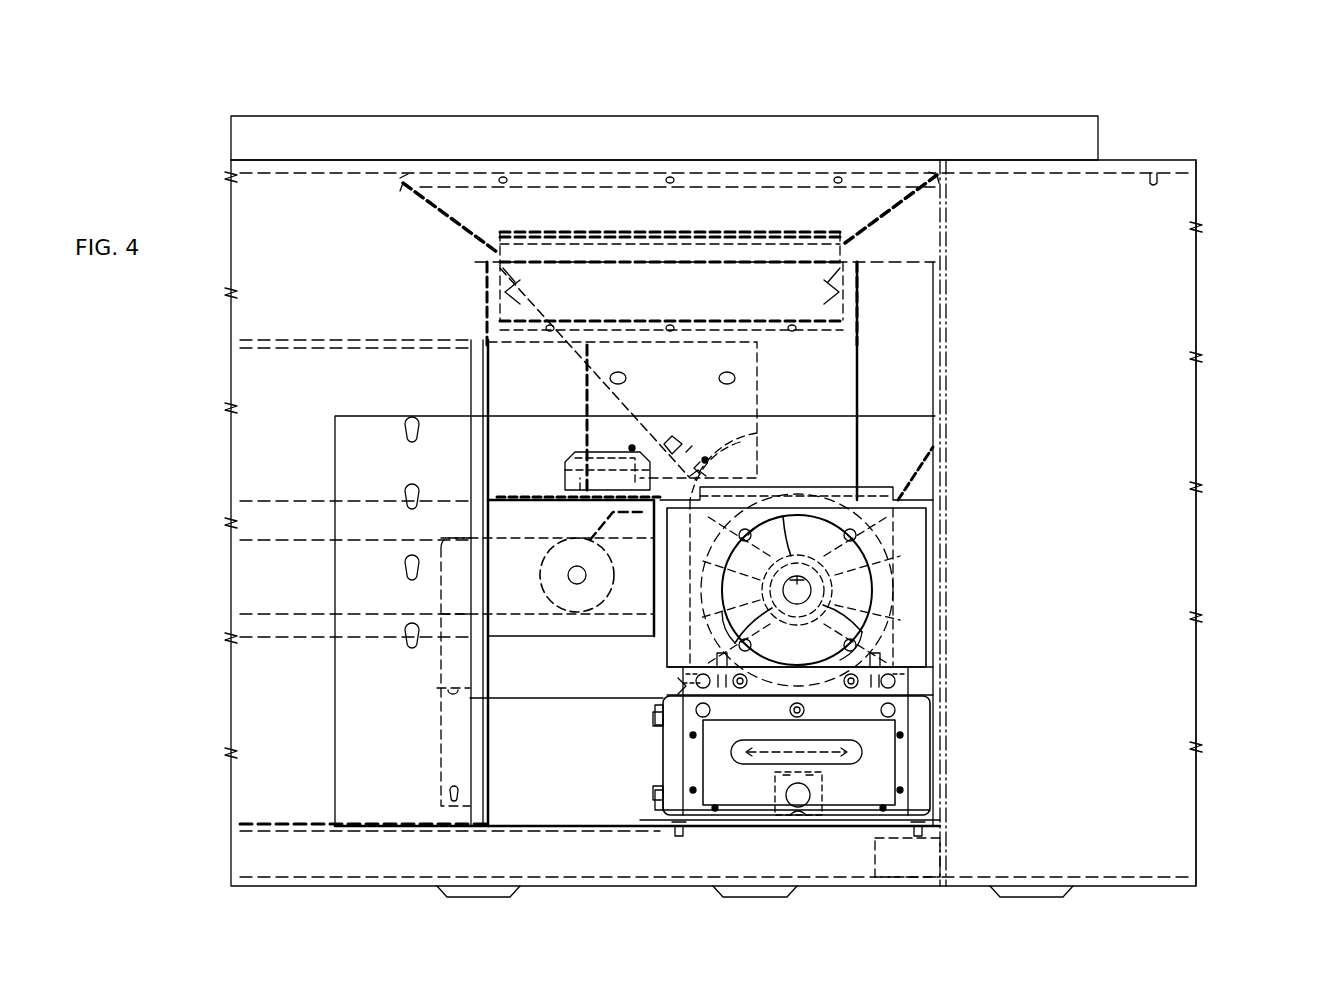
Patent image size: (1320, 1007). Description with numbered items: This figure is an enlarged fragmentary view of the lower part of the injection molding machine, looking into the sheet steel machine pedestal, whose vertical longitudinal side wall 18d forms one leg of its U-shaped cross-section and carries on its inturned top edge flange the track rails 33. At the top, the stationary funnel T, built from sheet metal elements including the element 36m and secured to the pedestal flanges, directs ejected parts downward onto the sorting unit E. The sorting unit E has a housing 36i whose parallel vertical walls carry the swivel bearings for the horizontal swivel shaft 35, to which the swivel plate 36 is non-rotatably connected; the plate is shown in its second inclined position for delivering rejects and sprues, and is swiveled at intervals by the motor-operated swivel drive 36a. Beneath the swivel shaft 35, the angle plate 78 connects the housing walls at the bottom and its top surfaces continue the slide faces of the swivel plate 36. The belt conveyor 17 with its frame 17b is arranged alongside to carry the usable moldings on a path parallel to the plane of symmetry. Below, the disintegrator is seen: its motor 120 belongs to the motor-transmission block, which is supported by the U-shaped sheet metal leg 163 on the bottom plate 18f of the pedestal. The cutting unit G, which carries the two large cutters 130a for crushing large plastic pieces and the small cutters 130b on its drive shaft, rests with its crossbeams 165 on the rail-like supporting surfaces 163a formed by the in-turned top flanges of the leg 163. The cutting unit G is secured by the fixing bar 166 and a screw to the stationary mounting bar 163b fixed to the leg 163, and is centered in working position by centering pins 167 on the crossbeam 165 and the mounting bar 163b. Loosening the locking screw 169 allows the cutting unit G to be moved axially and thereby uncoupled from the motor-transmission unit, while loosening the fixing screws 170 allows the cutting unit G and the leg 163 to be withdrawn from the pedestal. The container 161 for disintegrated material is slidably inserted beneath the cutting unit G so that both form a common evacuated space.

The funnel T is at (573, 150).
The track rails 33 is at (1083, 137).
The longitudinal side wall 18d is at (1127, 476).
The bottom plate 18f is at (552, 827).
The sheet metal element 36m is at (897, 190).
The swivel plate 36 is at (572, 358).
The housing 36i is at (862, 382).
The swivel drive 36a is at (585, 457).
The sorting unit E is at (857, 360).
The swivel shaft 35 is at (690, 430).
The angle plate 78 is at (757, 433).
The belt conveyor 17 is at (316, 640).
The frame 17b is at (640, 632).
The motor 120 is at (516, 693).
The cutting unit G is at (656, 648).
The large cutters 130a is at (860, 562).
The small cutters 130b is at (850, 602).
The fixing bar 166 is at (940, 689).
The centering pins 167 is at (900, 666).
The crossbeams 165 is at (660, 683).
The leg 163 is at (660, 755).
The supporting surfaces 163a is at (663, 698).
The mounting bar 163b is at (653, 720).
The locking screw 169 is at (805, 712).
The container 161 is at (760, 783).
The fixing screws 170 is at (925, 820).